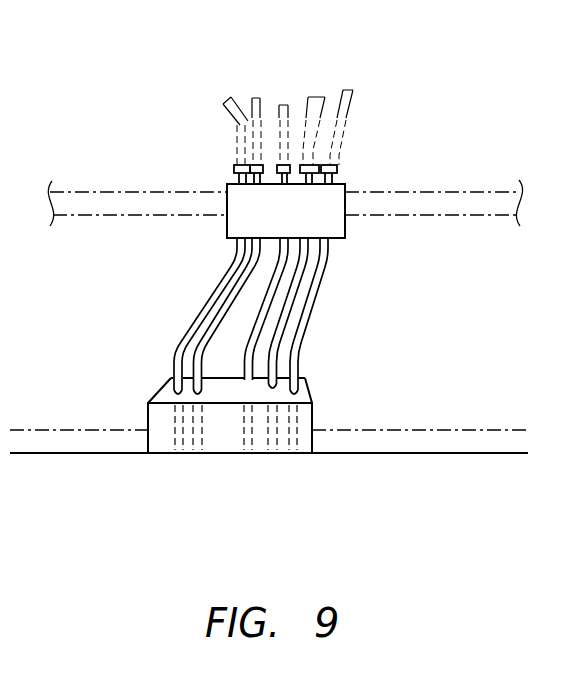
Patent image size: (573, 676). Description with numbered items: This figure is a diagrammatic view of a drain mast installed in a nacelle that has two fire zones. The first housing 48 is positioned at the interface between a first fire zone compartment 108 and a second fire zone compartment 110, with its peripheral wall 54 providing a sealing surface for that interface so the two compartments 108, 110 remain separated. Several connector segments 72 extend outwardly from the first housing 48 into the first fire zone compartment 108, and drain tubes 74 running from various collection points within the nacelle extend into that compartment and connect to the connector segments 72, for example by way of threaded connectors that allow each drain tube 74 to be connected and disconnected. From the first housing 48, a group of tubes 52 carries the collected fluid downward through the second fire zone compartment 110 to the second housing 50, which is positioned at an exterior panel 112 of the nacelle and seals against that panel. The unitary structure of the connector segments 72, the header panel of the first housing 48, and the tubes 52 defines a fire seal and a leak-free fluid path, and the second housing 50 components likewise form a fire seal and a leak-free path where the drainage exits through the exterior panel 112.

The first housing 48 is at (347, 230).
The second housing 50 is at (313, 420).
The tubes 52 is at (330, 313).
The peripheral wall 54 is at (227, 228).
The connector segments 72 is at (235, 176).
The drain tubes 74 is at (229, 98).
The first fire zone compartment 108 is at (440, 119).
The second fire zone compartment 110 is at (438, 361).
The exterior panel 112 is at (407, 454).